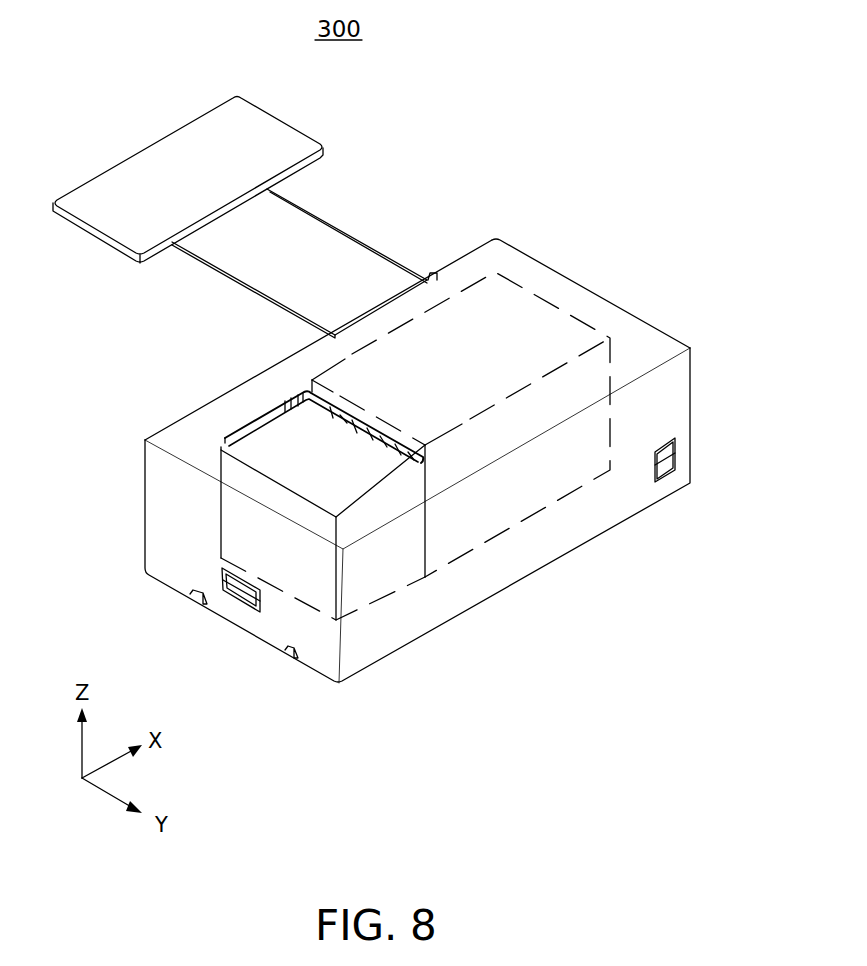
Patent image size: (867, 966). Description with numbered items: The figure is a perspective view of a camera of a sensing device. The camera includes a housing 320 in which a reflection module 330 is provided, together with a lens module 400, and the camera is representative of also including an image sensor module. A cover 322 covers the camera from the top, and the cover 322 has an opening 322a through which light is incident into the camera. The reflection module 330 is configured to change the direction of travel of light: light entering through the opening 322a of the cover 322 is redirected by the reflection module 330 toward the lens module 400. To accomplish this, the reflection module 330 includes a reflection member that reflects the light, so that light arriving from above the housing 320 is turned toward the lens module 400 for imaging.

The housing 320 is at (385, 637).
The cover 322 is at (192, 438).
The opening 322a is at (297, 448).
The reflection module 330 is at (392, 567).
The lens module 400 is at (512, 497).